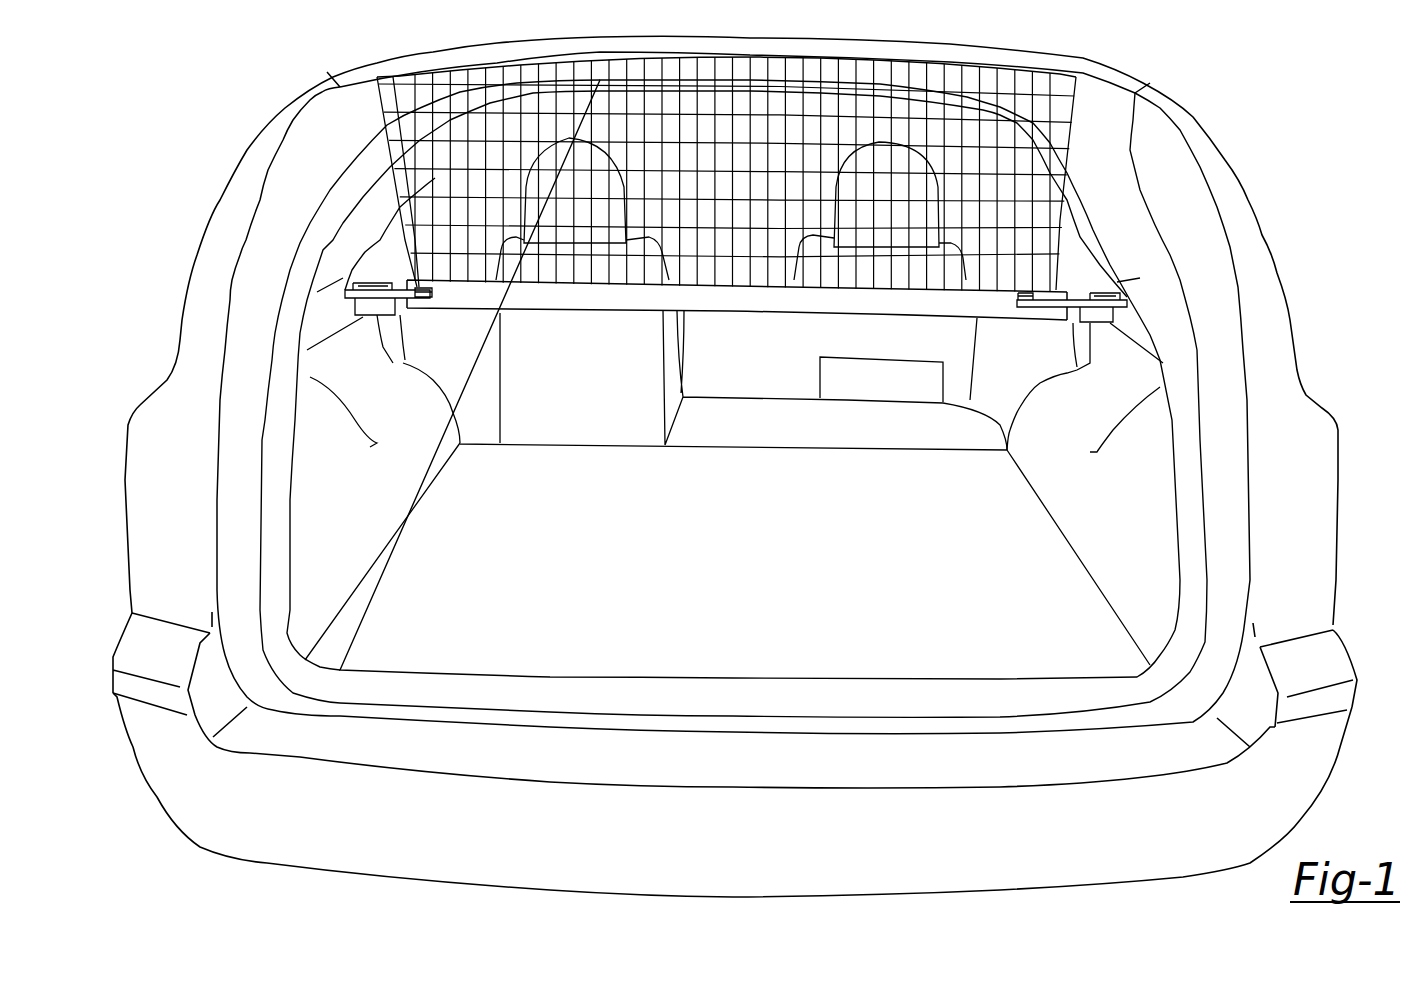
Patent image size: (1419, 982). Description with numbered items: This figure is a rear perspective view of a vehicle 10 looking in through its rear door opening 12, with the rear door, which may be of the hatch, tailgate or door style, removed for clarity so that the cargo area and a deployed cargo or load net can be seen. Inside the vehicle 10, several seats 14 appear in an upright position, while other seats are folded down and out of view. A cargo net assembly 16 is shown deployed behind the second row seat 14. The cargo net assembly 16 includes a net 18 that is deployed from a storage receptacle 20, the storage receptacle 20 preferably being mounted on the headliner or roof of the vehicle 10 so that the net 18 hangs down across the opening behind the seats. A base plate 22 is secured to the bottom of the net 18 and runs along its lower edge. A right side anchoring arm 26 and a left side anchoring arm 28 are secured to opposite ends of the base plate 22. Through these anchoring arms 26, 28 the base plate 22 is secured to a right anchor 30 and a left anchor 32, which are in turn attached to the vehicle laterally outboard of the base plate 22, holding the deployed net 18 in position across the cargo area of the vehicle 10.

The vehicle 10 is at (1225, 108).
The rear door opening 12 is at (487, 670).
The seats 14 is at (620, 418).
The cargo net assembly 16 is at (1082, 102).
The net 18 is at (390, 118).
The storage receptacle 20 is at (1067, 76).
The base plate 22 is at (750, 299).
The right side anchoring arm 26 is at (1068, 322).
The left side anchoring arm 28 is at (400, 313).
The right anchor 30 is at (1100, 297).
The left anchor 32 is at (363, 288).